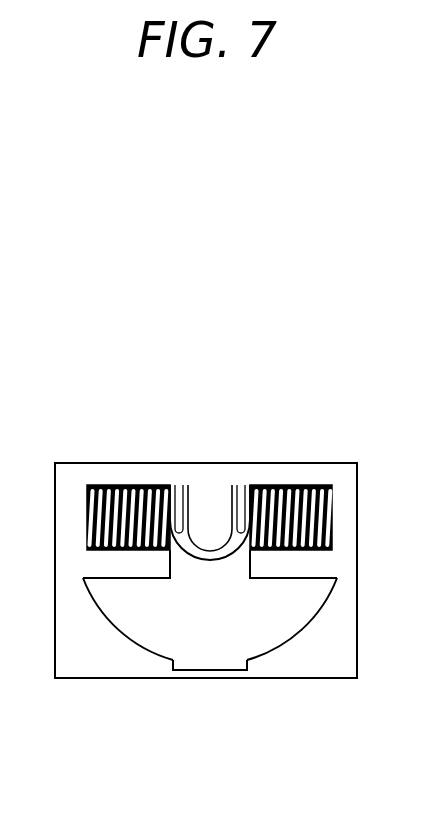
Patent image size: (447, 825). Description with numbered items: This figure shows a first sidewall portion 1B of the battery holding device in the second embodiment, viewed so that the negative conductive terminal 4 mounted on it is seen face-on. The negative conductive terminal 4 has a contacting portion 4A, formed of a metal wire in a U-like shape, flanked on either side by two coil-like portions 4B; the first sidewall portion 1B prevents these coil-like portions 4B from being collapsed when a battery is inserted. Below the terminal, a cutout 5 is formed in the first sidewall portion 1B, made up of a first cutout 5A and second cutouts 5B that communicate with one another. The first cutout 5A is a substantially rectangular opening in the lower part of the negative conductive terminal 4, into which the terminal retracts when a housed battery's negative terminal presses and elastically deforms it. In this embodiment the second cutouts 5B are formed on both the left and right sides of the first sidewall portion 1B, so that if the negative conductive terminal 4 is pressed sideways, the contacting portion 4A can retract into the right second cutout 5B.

The first sidewall portion 1B is at (337, 461).
The negative conductive terminal 4 is at (209, 447).
The contacting portion 4A is at (209, 550).
The coil-like portions 4B is at (153, 492).
The cutout 5 is at (210, 671).
The first cutout 5A is at (210, 693).
The second cutout 5B is at (140, 625).